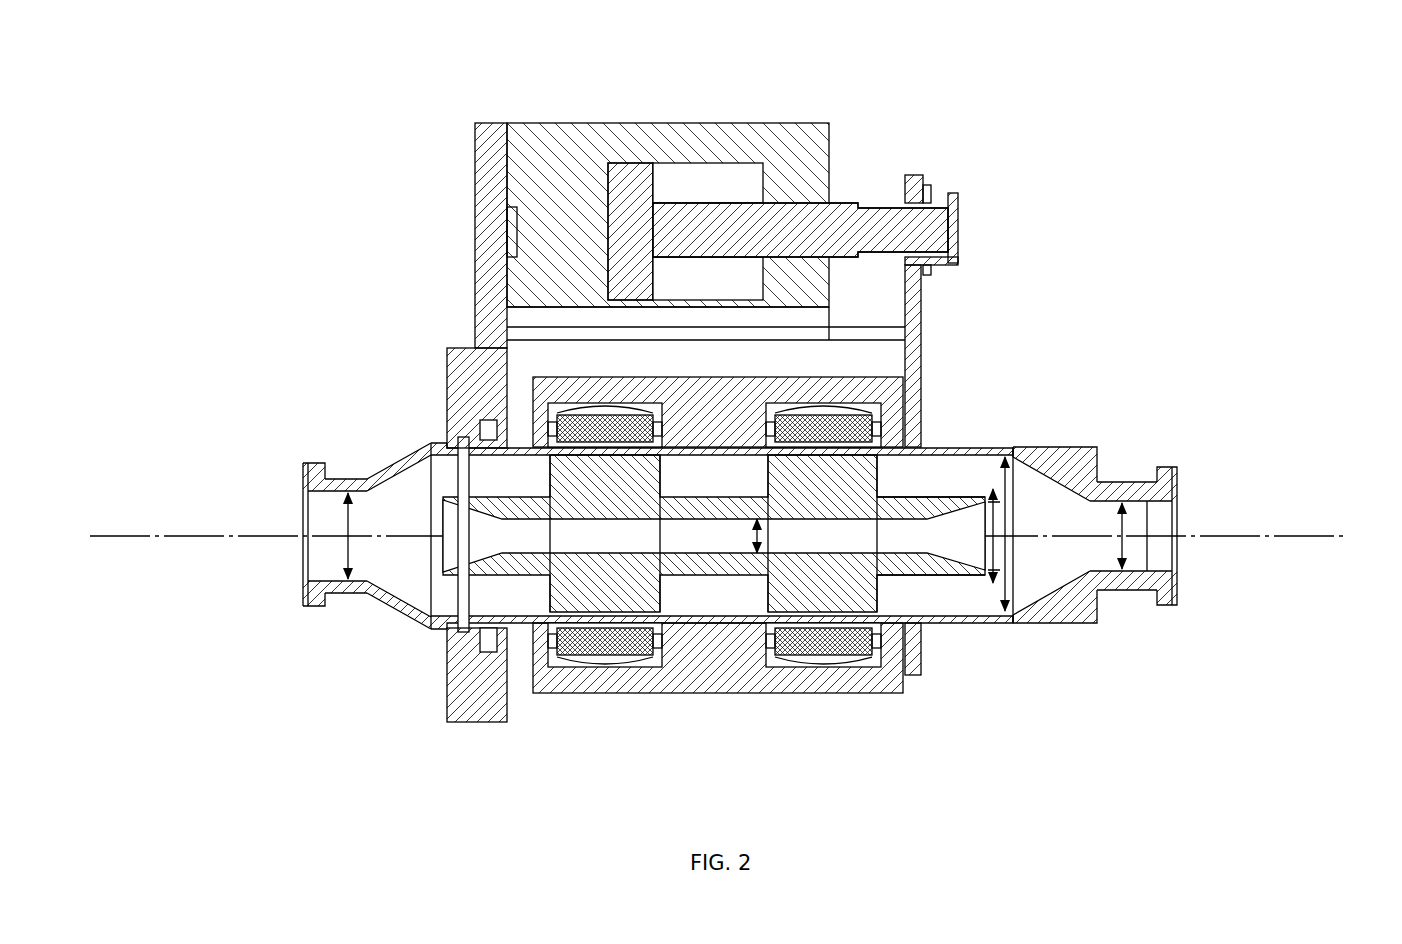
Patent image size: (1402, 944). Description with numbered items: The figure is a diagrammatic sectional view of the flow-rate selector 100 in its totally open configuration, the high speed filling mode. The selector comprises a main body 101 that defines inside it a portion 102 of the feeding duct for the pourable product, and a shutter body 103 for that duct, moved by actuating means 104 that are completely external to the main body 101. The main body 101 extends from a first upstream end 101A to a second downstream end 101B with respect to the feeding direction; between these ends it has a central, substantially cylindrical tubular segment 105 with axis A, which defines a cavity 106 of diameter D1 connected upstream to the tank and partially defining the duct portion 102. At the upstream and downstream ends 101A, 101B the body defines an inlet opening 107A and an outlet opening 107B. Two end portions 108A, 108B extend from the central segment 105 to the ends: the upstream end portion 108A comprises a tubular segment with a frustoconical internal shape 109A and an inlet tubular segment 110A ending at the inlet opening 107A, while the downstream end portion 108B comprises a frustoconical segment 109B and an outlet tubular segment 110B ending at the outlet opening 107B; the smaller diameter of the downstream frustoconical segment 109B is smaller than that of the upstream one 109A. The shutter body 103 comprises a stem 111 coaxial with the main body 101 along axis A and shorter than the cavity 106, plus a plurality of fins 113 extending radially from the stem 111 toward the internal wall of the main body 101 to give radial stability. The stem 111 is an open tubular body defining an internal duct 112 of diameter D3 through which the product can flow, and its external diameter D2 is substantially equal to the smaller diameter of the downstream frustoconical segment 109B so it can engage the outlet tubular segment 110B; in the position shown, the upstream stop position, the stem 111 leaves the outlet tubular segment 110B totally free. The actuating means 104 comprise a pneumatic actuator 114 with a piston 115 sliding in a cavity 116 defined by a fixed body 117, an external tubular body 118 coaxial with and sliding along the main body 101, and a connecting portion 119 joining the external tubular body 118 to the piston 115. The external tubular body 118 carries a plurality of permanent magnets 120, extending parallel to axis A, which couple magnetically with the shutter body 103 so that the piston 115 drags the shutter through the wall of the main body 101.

The flow-rate selector 100 is at (1165, 178).
The main body 101 is at (985, 642).
The first upstream end 101A is at (298, 603).
The second downstream end 101B is at (1200, 470).
The portion of feeding duct 102 is at (920, 606).
The shutter body 103 is at (912, 485).
The actuating means 104 is at (868, 183).
The cylindrical tubular segment 105 is at (992, 450).
The cavity 106 is at (690, 600).
The inlet opening 107A is at (320, 500).
The outlet opening 107B is at (1176, 582).
The upstream end portion 108A is at (390, 450).
The downstream end portion 108B is at (1082, 440).
The upstream frustoconical segment 109A is at (395, 606).
The downstream frustoconical segment 109B is at (1078, 612).
The inlet tubular segment 110A is at (345, 596).
The outlet tubular segment 110B is at (1123, 596).
The stem 111 is at (840, 570).
The internal duct 112 is at (555, 545).
The fins 113 is at (820, 468).
The pneumatic actuator 114 is at (604, 106).
The piston 115 is at (833, 210).
The cavity 116 is at (680, 178).
The fixed body 117 is at (522, 140).
The external tubular body 118 is at (830, 380).
The connecting portion 119 is at (908, 300).
The permanent magnets 120 is at (593, 415).
The axis A is at (1318, 500).
The cavity diameter D1 is at (1008, 530).
The stem external diameter D2 is at (990, 538).
The internal duct diameter D3 is at (762, 537).